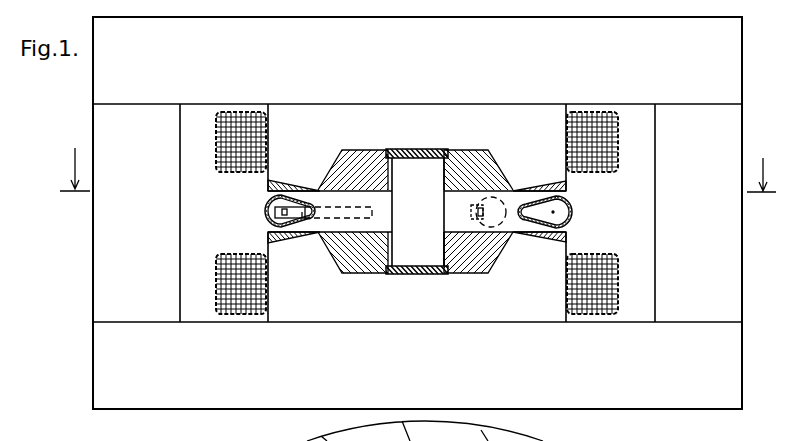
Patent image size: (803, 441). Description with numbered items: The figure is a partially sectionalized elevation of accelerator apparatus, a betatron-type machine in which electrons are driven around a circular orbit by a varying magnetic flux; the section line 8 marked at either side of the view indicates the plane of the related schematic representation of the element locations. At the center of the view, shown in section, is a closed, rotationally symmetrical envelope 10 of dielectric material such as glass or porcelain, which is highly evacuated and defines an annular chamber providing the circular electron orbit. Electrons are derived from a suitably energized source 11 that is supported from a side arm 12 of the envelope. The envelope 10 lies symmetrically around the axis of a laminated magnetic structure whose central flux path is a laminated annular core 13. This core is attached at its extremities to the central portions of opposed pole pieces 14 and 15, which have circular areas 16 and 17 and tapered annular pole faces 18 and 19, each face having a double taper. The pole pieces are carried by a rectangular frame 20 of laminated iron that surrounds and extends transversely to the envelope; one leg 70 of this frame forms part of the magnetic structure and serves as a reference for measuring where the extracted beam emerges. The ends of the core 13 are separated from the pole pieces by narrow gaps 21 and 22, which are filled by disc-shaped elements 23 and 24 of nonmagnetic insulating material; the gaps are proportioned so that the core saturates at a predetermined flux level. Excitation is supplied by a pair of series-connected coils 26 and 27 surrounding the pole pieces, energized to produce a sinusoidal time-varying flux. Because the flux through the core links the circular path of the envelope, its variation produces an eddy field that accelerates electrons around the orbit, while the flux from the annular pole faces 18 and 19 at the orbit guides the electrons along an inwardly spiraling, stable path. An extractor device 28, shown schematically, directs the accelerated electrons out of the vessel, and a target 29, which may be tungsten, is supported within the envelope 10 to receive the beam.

The section line 8- 8 is at (418, 162).
The envelope 10 is at (277, 213).
The source 11 is at (471, 215).
The side arm 12 is at (514, 235).
The laminated annular core 13 is at (444, 208).
The pole piece 14 is at (467, 111).
The pole piece 15 is at (430, 323).
The circular area 16 is at (461, 156).
The circular area 17 is at (463, 271).
The tapered annular area or pole face 18 is at (272, 191).
The tapered annular area or pole face 19 is at (273, 230).
The rectangular frame 20 is at (742, 55).
The gap 21 is at (390, 163).
The gap 22 is at (447, 266).
The disc-shaped element 23 is at (446, 164).
The disc-shaped element 24 is at (392, 266).
The coil 26 is at (216, 148).
The coil 27 is at (216, 289).
The extractor device 28 is at (207, 230).
The target 29 is at (314, 214).
The leg 70 is at (657, 285).